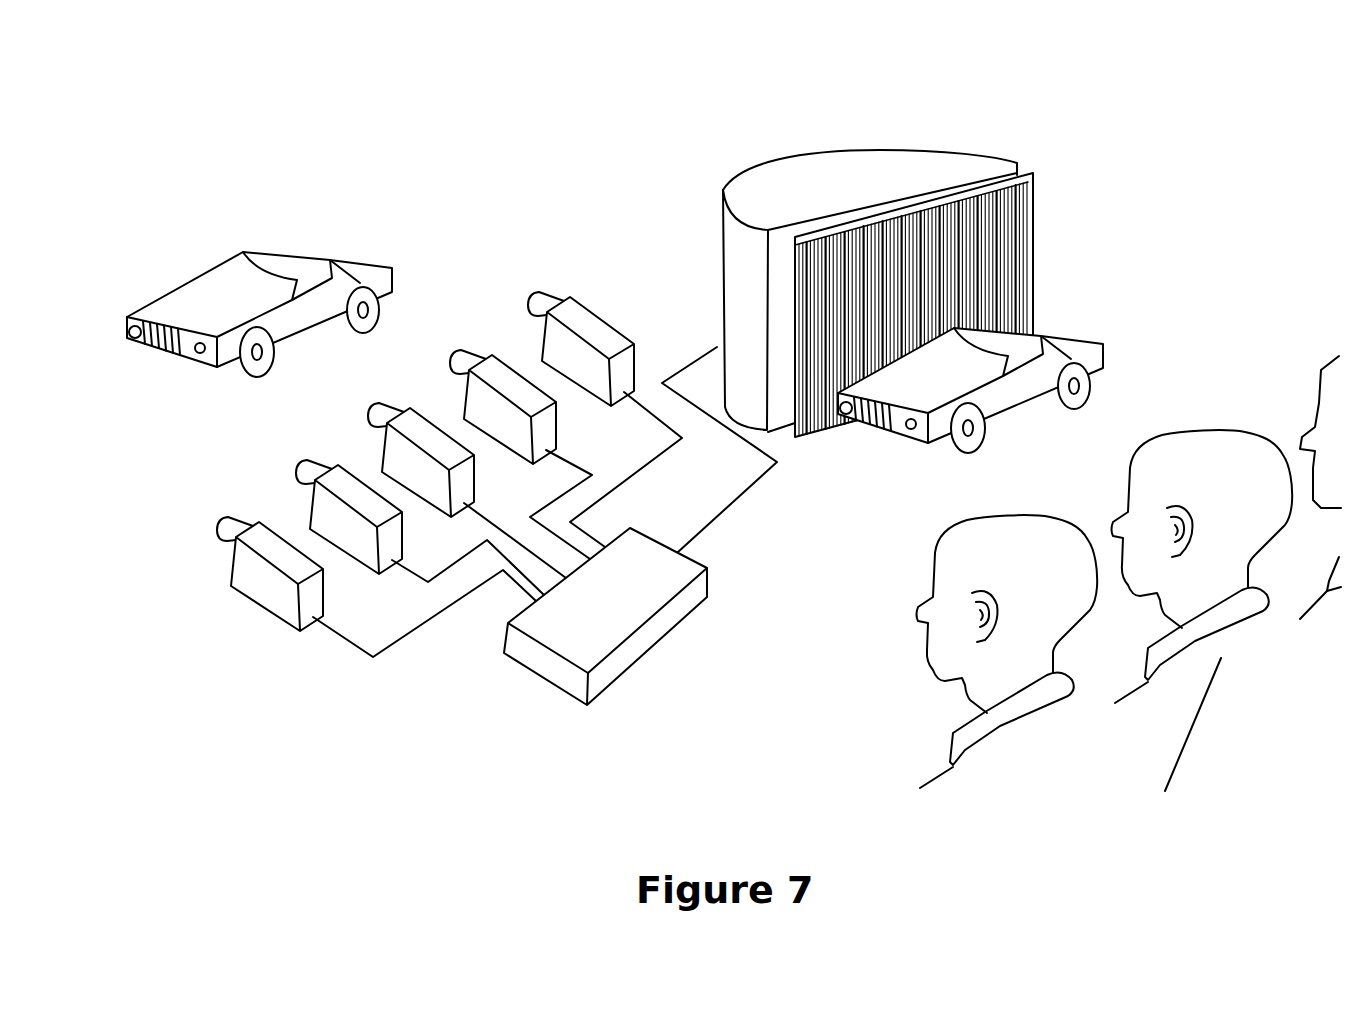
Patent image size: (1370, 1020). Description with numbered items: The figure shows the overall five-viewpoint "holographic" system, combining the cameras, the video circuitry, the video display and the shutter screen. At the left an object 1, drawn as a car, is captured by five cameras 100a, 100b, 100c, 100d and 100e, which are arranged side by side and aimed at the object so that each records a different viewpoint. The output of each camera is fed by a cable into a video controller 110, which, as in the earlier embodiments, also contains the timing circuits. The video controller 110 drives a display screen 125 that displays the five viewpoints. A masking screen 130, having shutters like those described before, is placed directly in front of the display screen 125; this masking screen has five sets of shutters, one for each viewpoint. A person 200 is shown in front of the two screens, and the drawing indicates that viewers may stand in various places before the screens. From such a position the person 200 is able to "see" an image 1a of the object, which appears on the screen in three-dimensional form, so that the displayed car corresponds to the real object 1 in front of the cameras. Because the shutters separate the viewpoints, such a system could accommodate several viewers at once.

The object 1 is at (198, 282).
The image 1a is at (1100, 375).
The camera 100a is at (205, 525).
The camera 100b is at (282, 474).
The camera 100c is at (376, 397).
The camera 100d is at (455, 345).
The camera 100e is at (535, 275).
The video controller 110 is at (532, 675).
The display screen 125 is at (812, 172).
The masking screen 130 is at (1040, 244).
The person 200 is at (997, 735).